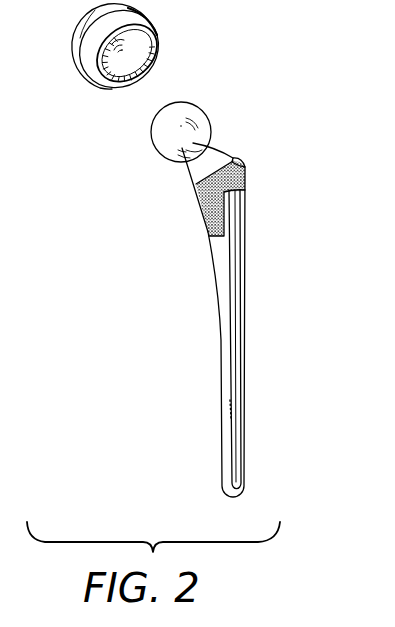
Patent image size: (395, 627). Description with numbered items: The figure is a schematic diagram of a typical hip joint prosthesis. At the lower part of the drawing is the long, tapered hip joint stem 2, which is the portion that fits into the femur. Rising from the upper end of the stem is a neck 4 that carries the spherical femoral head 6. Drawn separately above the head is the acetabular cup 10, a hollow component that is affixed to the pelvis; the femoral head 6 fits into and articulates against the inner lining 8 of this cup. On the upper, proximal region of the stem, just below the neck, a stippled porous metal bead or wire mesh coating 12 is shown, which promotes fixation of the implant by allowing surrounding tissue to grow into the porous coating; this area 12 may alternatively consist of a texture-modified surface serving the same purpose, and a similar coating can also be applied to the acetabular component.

The hip joint stem 2 is at (220, 310).
The neck 4 is at (203, 172).
The femoral head 6 is at (158, 143).
The inner lining 8 is at (108, 68).
The acetabular cup 10 is at (87, 30).
The porous metal bead or wire mesh coating 12 is at (202, 210).